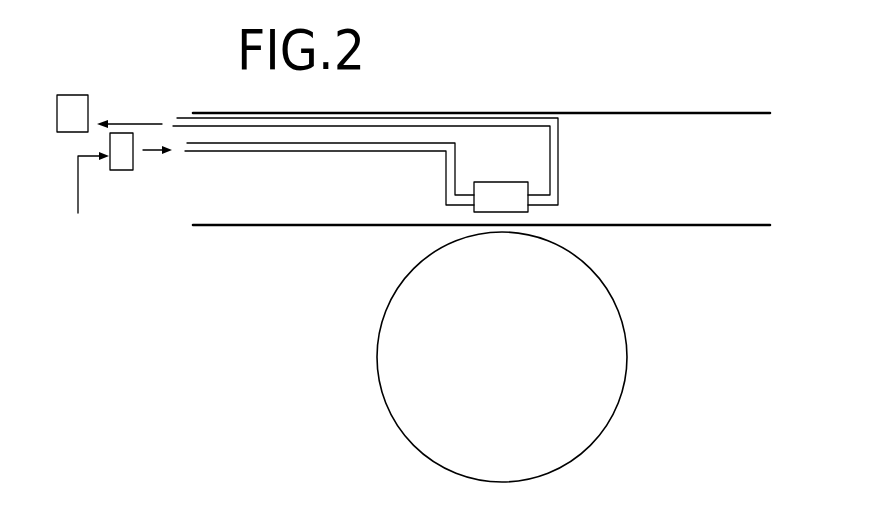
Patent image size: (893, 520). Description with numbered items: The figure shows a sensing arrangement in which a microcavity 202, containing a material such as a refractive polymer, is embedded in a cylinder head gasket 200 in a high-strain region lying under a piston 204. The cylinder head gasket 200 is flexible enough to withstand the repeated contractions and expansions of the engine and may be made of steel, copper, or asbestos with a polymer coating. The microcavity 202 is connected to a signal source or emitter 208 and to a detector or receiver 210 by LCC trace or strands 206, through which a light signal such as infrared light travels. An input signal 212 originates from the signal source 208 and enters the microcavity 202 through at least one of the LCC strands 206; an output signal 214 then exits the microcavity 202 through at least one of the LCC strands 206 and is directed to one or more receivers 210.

The cylinder head gasket 200 is at (620, 110).
The microcavity 202 is at (466, 213).
The piston 204 is at (346, 358).
The LCC trace or strands 206 is at (296, 115).
The signal source or emitter 208 is at (120, 172).
The detector or receiver 210 is at (70, 95).
The input signal 212 is at (148, 152).
The output signal 214 is at (128, 122).